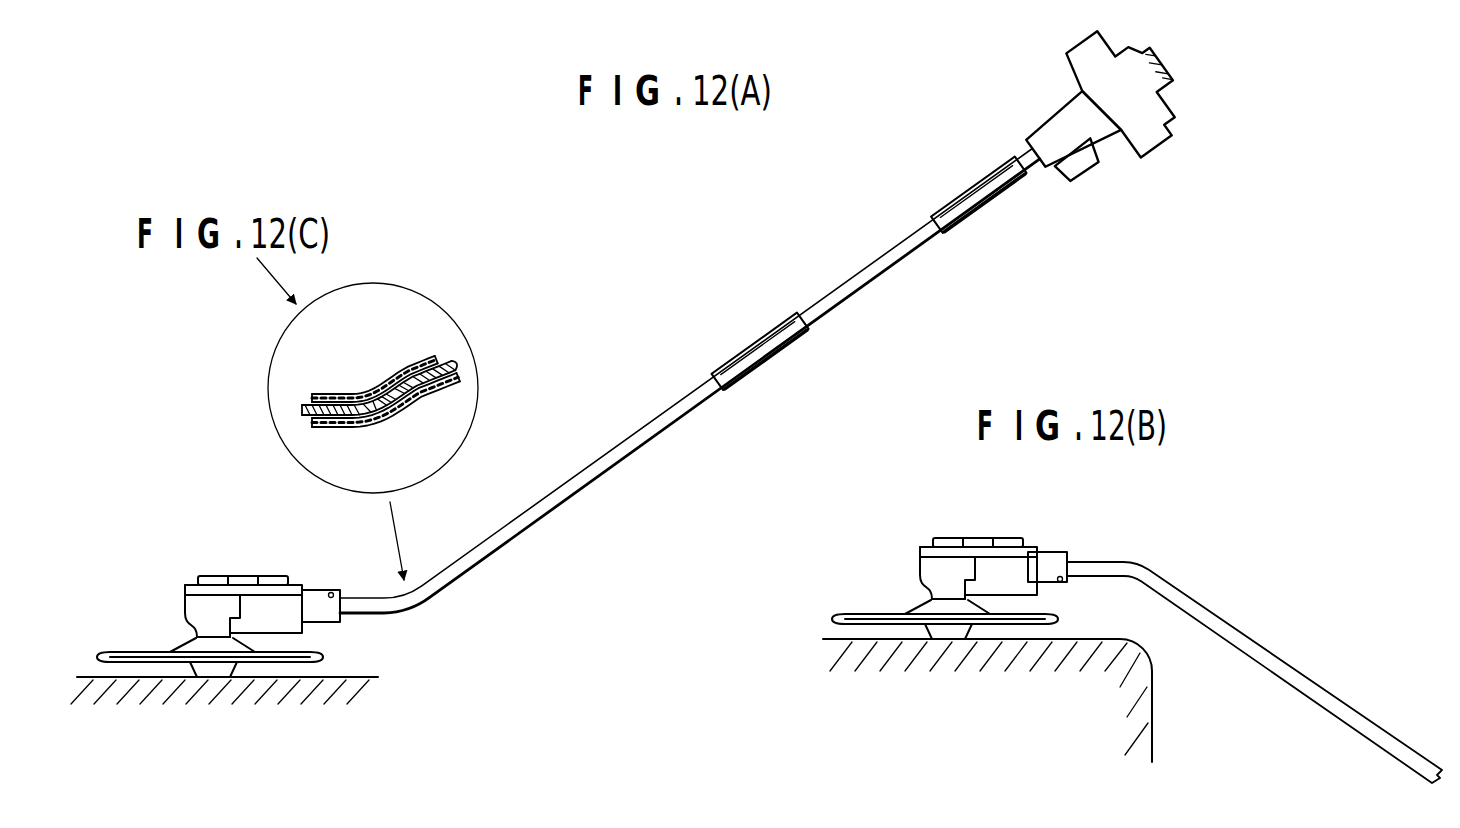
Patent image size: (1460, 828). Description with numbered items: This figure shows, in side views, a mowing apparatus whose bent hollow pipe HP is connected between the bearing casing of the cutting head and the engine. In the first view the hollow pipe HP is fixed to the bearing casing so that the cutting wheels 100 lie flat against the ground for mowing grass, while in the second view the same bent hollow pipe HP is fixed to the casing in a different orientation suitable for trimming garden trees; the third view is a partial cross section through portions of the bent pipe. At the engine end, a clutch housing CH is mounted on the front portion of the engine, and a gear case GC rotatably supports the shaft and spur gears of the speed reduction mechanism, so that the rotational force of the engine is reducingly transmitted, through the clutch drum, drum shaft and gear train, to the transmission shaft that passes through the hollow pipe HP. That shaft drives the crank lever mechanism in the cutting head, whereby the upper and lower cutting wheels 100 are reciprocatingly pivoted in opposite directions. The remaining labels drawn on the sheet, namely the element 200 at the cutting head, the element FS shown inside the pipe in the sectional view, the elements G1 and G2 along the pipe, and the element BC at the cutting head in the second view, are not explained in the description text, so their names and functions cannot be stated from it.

In FIG. 12A, the cutting wheel 100 is at (88, 650).
In FIG. 12B, the cutting wheel 100 is at (830, 617).
In FIG. 12A, the connector joint 200 is at (333, 590).
In FIG. 12B, the connector joint 200 is at (1062, 582).
In FIG. 12A, the hollow pipe HP is at (582, 478).
In FIG. 12B, the hollow pipe HP is at (1287, 668).
In FIG. 12C, the hollow pipe HP is at (393, 423).
In FIG. 12C, the flexible shaft FS is at (340, 406).
In FIG. 12A, the first grip G1 is at (743, 362).
In FIG. 12A, the second grip G2 is at (952, 208).
In FIG. 12A, the clutch housing CH is at (1050, 138).
In FIG. 12A, the gear case GC is at (1080, 160).
In FIG. 12B, the bracket connector BC is at (1042, 556).